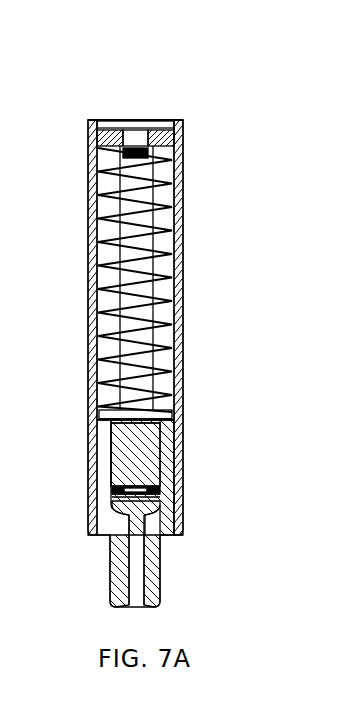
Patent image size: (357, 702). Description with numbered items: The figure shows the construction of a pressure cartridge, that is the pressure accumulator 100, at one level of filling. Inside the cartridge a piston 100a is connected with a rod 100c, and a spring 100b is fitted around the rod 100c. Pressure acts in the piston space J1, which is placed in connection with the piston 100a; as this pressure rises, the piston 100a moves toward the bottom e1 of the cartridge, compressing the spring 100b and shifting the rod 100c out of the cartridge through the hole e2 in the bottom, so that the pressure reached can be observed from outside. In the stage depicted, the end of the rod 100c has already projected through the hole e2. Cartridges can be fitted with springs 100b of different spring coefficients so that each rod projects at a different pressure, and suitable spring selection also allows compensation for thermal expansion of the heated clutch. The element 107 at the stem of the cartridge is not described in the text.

The pressure accumulator 100 is at (173, 77).
The piston 100a is at (163, 410).
The spring 100b is at (157, 214).
The rod 100c is at (88, 160).
The bottom of the cartridge e1 is at (183, 132).
The hole in the bottom of the cartridge e2 is at (157, 107).
The piston space J1 is at (137, 460).
The shaft portion 107 is at (147, 559).